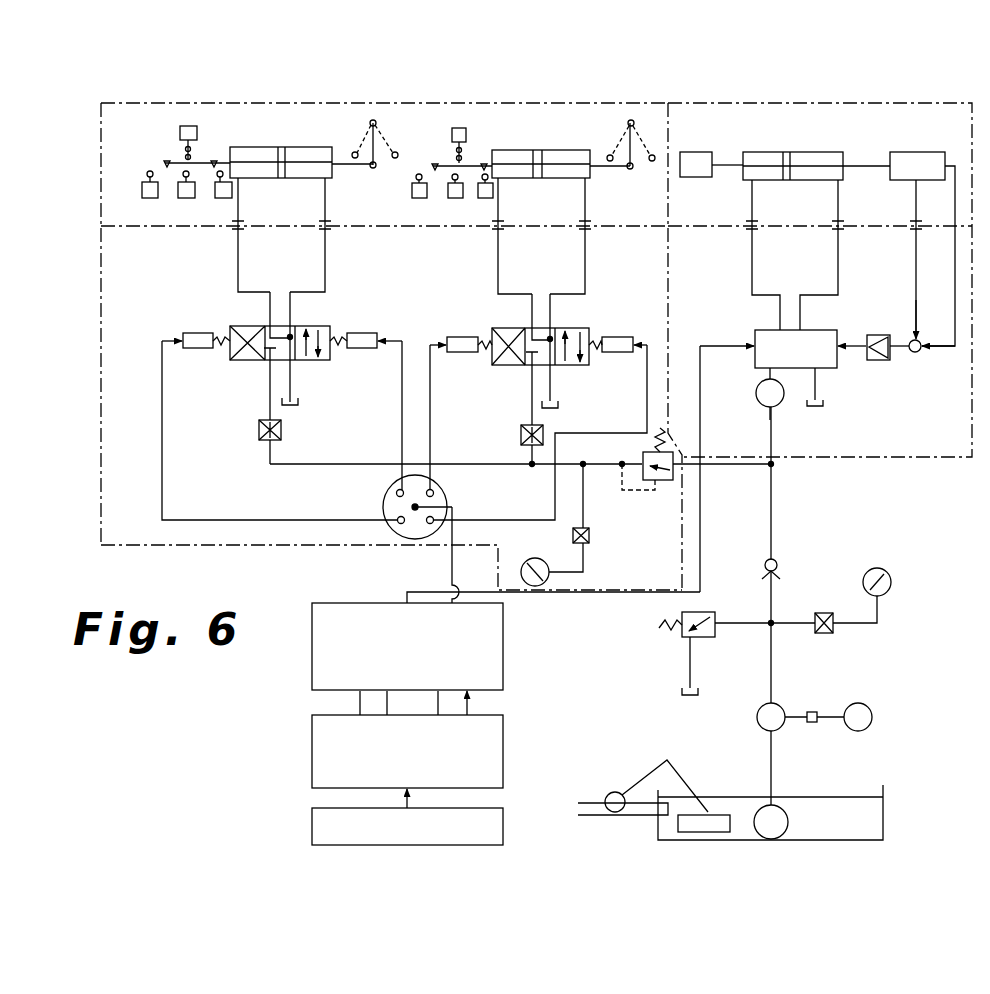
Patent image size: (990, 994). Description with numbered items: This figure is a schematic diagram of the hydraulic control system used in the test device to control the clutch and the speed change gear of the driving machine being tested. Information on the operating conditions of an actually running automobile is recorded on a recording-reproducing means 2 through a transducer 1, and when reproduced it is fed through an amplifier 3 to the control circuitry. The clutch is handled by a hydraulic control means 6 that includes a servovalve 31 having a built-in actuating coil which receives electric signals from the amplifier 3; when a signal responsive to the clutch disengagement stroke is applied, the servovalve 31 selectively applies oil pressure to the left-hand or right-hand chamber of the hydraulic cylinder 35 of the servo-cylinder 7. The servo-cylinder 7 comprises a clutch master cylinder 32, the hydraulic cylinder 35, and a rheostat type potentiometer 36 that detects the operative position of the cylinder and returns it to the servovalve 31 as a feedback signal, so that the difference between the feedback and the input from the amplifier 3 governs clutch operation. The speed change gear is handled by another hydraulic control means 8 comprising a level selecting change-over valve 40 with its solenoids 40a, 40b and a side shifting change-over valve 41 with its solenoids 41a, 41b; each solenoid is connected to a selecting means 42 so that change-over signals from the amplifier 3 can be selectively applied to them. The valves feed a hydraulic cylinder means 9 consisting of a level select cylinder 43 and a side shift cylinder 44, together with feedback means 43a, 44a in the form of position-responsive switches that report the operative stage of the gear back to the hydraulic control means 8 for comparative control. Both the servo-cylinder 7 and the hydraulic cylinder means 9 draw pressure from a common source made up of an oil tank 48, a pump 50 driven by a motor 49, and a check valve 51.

The transducer 1 is at (312, 830).
The recording-reproducing means 2 is at (312, 757).
The amplifier 3 is at (312, 655).
The hydraulic control means 6 is at (925, 460).
The servo-cylinder 7 is at (946, 100).
The hydraulic control means 8 is at (245, 549).
The hydraulic cylinder means 9 is at (125, 100).
The servovalve 31 is at (828, 364).
The clutch master cylinder 32 is at (695, 160).
The hydraulic cylinder 35 is at (806, 158).
The rheostat type potentiometer 36 is at (912, 158).
The level selecting change-over valve 40 is at (268, 362).
The solenoid 40a is at (197, 350).
The solenoid 40b is at (362, 350).
The side shifting change-over valve 41 is at (530, 367).
The solenoid 41a is at (461, 354).
The solenoid 41b is at (617, 354).
The selecting means 42 is at (386, 497).
The level select cylinder 43 is at (279, 147).
The feedback means 43a is at (183, 162).
The side shift cylinder 44 is at (541, 150).
The feedback means 44a is at (467, 145).
The oil tank 48 is at (883, 825).
The motor 49 is at (862, 731).
The pump 50 is at (762, 705).
The check valve 51 is at (781, 562).